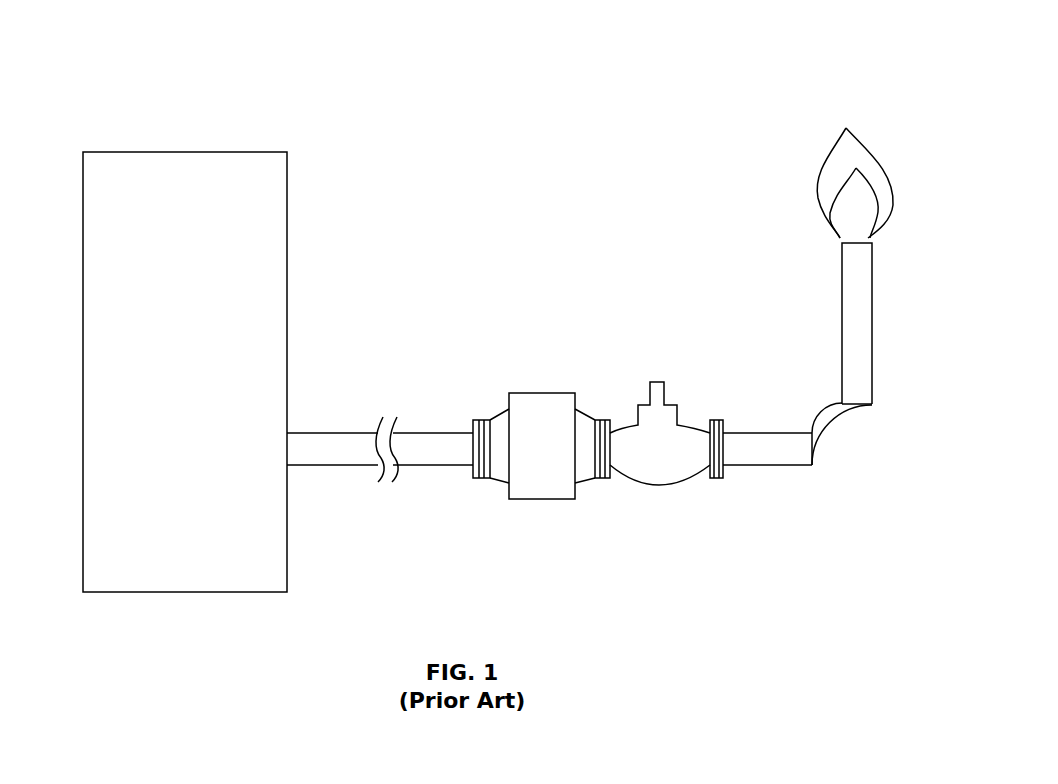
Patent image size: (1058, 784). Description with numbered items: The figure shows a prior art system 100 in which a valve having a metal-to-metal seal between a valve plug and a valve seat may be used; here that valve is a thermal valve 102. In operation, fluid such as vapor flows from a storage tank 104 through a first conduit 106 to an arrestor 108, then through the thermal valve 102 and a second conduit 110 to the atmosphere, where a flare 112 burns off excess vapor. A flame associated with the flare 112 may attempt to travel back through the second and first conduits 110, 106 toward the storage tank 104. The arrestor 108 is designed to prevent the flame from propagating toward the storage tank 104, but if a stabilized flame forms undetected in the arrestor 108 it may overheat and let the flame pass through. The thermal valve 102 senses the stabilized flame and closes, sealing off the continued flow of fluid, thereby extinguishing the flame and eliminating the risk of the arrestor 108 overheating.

The system 100 is at (755, 63).
The thermal valve 102 is at (688, 443).
The storage tank 104 is at (262, 229).
The first conduit 106 is at (320, 448).
The arrestor 108 is at (540, 410).
The second conduit 110 is at (855, 330).
The flare 112 is at (840, 180).